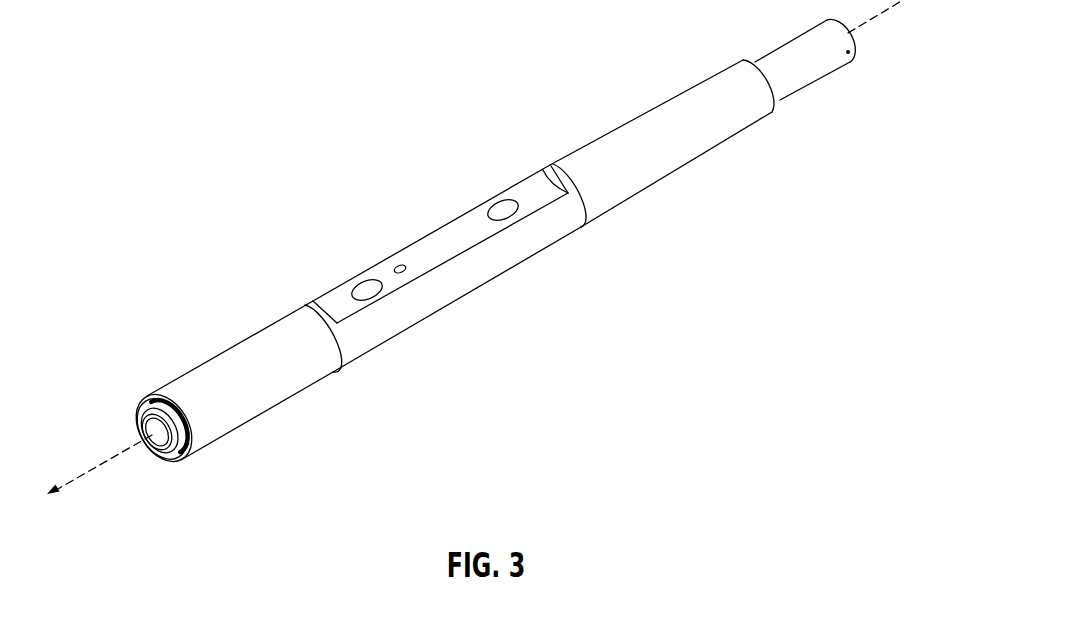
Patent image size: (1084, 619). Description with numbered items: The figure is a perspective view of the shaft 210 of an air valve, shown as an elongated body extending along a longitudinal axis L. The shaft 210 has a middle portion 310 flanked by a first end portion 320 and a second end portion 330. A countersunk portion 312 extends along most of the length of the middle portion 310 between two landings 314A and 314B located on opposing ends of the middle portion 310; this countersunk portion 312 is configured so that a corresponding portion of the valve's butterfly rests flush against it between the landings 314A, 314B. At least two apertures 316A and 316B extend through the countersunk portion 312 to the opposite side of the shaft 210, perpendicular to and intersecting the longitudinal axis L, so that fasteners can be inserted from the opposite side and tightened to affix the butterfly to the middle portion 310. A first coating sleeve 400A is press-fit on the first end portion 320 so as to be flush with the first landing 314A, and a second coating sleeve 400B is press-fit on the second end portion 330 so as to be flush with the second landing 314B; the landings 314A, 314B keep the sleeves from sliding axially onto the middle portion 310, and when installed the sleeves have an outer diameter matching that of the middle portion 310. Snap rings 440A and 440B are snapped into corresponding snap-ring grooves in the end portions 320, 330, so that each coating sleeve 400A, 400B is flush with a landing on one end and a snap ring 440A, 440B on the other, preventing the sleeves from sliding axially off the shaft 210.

The shaft 210 is at (261, 144).
The middle portion 310 is at (592, 236).
The countersunk portion 312 is at (427, 243).
The first landing 314A is at (316, 302).
The second landing 314B is at (553, 164).
The first aperture 316A is at (365, 282).
The second aperture 316B is at (500, 203).
The first end portion 320 is at (338, 373).
The second end portion 330 is at (850, 34).
The first coating sleeve 400A is at (233, 345).
The second coating sleeve 400B is at (645, 122).
The first snap ring 440A is at (150, 397).
The second snap ring 440B is at (713, 82).
The longitudinal axis L is at (118, 457).